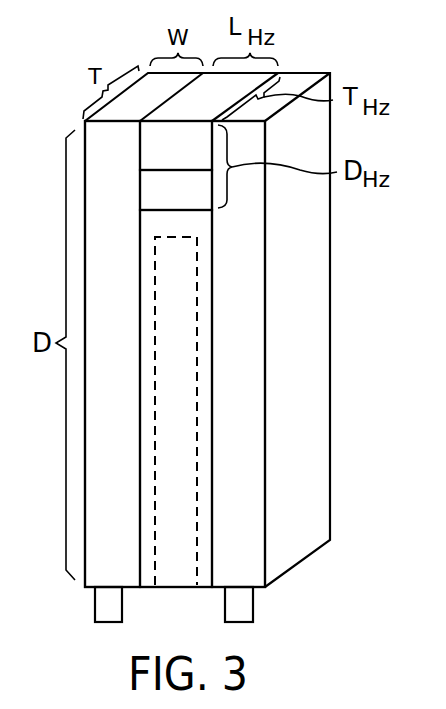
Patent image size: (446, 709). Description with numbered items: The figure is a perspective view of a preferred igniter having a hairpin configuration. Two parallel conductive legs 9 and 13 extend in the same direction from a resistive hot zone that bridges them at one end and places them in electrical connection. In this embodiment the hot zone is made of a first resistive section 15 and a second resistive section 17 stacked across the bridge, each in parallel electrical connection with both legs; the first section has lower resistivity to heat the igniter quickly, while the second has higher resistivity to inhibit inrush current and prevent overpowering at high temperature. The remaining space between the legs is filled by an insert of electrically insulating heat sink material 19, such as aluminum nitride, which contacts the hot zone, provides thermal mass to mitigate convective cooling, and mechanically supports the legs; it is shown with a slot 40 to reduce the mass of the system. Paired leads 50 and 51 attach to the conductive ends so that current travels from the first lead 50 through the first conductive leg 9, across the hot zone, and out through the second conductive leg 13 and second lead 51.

The first conductive leg 9 is at (99, 402).
The second conductive leg 13 is at (224, 402).
The first resistive section 15 is at (188, 157).
The second resistive section 17 is at (188, 202).
The electrically insulating heat sink material 19 is at (186, 402).
The slot 40 is at (200, 336).
The first lead 50 is at (112, 603).
The second lead 51 is at (238, 607).